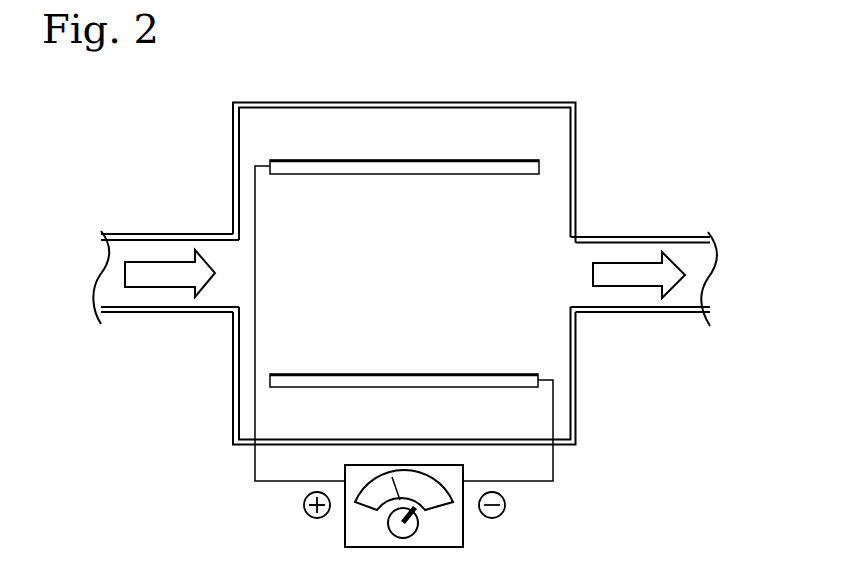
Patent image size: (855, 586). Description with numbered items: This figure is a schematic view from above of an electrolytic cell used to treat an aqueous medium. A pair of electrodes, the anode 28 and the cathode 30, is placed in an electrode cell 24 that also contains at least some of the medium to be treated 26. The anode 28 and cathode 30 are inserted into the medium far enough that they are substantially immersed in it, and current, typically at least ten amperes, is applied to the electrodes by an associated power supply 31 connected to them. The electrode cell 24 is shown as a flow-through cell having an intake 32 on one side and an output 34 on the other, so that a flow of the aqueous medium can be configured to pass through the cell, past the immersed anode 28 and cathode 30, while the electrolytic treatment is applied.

The electrode cell 24 is at (550, 55).
The medium to be treated 26 is at (553, 196).
The anode 28 is at (335, 158).
The cathode 30 is at (353, 388).
The power supply 31 is at (463, 530).
The intake 32 is at (153, 233).
The output 34 is at (615, 313).